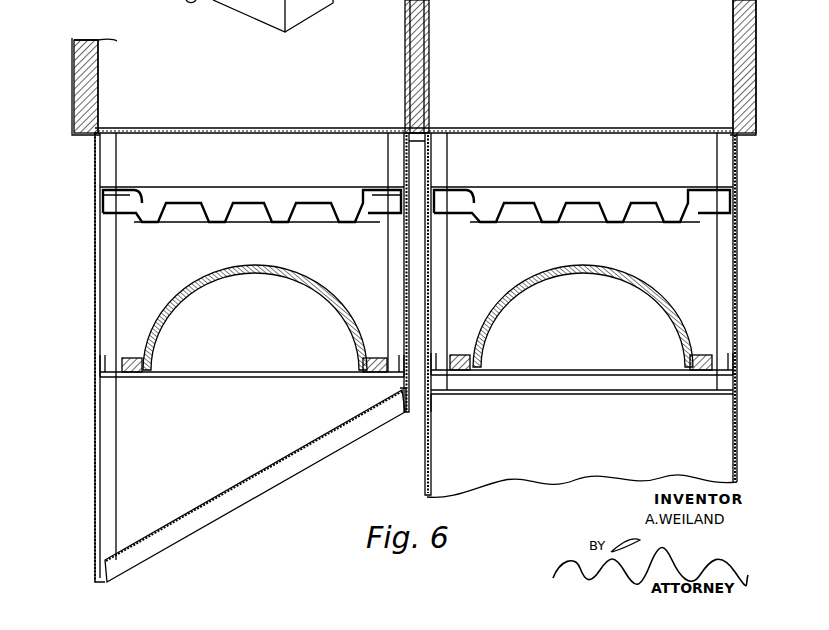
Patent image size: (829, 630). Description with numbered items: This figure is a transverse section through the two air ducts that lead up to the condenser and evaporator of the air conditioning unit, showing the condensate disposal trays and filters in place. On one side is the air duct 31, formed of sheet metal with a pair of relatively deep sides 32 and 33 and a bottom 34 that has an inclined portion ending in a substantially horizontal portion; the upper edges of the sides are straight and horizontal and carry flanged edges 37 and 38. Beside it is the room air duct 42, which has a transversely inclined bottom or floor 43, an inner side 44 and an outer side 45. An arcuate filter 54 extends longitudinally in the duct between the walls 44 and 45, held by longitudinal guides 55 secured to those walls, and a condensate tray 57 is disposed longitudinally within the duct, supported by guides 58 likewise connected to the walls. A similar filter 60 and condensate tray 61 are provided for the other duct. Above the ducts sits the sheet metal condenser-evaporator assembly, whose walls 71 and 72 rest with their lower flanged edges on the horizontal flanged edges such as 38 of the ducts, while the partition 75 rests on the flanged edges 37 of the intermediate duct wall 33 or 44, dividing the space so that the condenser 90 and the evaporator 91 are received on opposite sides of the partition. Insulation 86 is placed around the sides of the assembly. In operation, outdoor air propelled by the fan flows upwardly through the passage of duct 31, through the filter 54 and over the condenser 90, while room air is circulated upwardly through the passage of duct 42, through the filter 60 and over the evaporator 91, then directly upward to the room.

The air duct 31 is at (486, 375).
The sheet metal side 32 is at (735, 265).
The sheet metal side 33 is at (430, 283).
The bottom 34 is at (580, 390).
The flanged edge 37 is at (418, 143).
The flanged edge 38 is at (745, 138).
The room air duct 42 is at (331, 400).
The bottom or floor 43 is at (272, 466).
The inner side 44 is at (405, 278).
The outer side 45 is at (100, 282).
The arcuate filter 54 is at (212, 283).
The longitudinal guide 55 is at (130, 358).
The condensate tray 57 is at (204, 208).
The guide 58 is at (129, 222).
The filter 60 is at (535, 285).
The condensate tray 61 is at (572, 205).
The sheet metal wall 71 is at (78, 112).
The sheet metal wall 72 is at (735, 98).
The partition 75 is at (428, 108).
The insulation 86 is at (82, 78).
The condenser 90 is at (720, 42).
The evaporator 91 is at (76, 41).